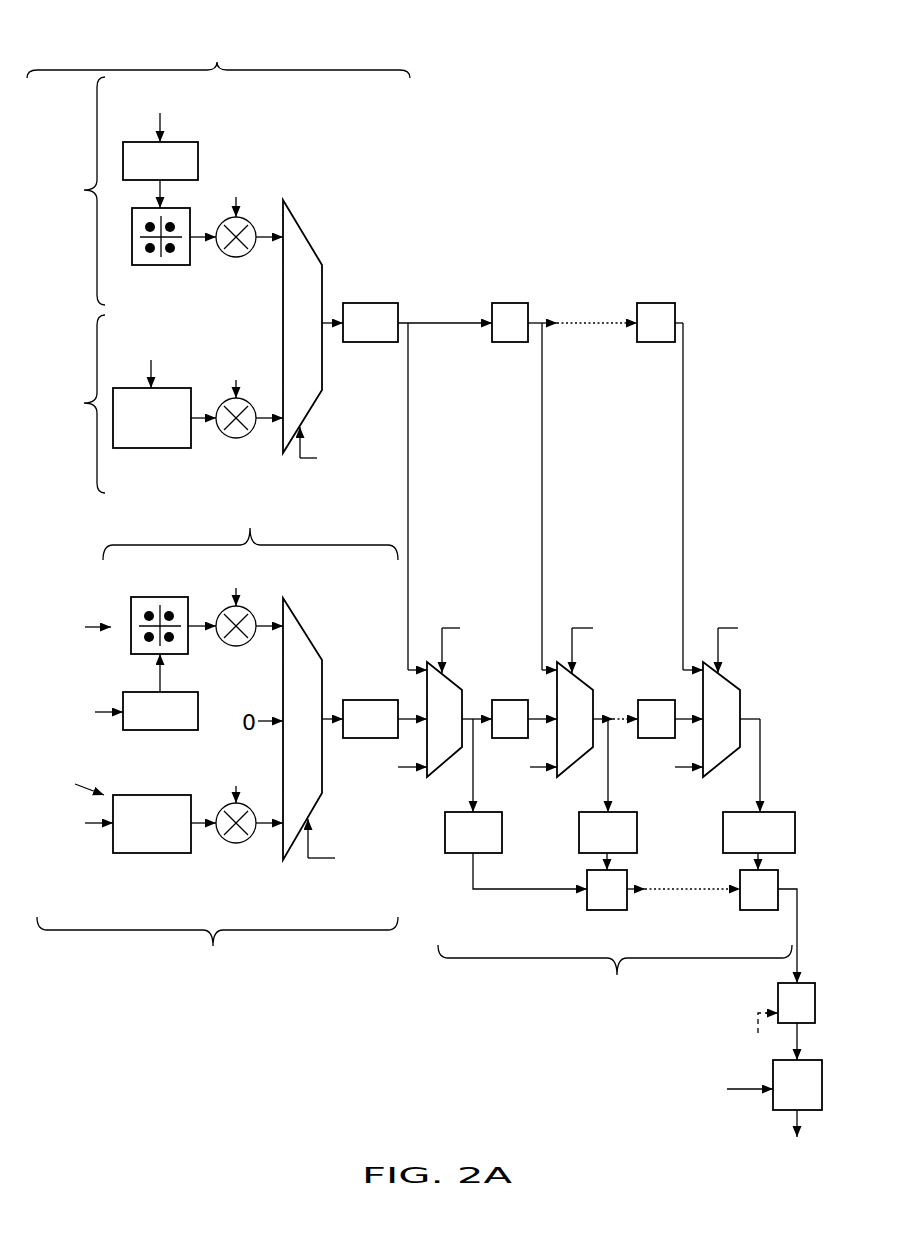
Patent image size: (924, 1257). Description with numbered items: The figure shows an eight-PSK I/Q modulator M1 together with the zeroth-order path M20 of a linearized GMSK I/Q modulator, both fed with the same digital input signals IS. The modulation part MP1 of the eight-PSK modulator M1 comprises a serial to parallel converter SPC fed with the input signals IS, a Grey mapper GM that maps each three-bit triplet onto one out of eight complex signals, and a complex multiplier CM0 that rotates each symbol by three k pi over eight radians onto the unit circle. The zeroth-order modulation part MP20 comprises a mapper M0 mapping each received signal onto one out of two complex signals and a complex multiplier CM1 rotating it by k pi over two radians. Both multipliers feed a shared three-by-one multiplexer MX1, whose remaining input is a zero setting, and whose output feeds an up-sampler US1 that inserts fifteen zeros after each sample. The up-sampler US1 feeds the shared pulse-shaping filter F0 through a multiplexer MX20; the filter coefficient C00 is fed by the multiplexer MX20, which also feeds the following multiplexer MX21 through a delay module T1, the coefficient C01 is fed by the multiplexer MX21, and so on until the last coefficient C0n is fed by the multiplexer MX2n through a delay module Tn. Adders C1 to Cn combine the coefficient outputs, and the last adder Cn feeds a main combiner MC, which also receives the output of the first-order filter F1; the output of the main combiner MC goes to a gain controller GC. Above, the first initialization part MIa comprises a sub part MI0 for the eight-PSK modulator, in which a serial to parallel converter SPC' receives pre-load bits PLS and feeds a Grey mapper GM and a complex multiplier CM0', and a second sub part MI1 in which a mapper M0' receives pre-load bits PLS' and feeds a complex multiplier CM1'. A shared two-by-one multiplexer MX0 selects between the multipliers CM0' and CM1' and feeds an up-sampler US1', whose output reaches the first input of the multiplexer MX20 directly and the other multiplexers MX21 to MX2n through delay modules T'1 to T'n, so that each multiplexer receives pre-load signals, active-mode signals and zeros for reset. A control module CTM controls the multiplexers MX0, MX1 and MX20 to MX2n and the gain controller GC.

The first part of the initialization means MIa is at (257, 62).
The first sub part of the initialization means MI0 is at (96, 156).
The second sub part of the initialization means MI1 is at (96, 380).
The initialization bits PLS is at (163, 116).
The serial to parallel converter SPC' is at (203, 155).
The Grey mapper GM is at (152, 265).
The complex multiplier CM0' is at (239, 239).
The shared 2×1 multiplexer MX0 is at (327, 222).
The initialization bits PLS' is at (152, 362).
The mapper M0' is at (152, 445).
The complex multiplier CM1' is at (237, 421).
The control module CTM is at (545, 766).
The up-sampler US1' is at (361, 350).
The modulation part MP1 is at (313, 544).
The delay module T'1 is at (508, 295).
The delay module T'n is at (655, 295).
The 8PSK I/Q modulator M1 is at (81, 627).
The complex multiplier CM0 is at (235, 628).
The up-sampler US1 is at (360, 693).
The digital input signals IS is at (93, 767).
The serial to parallel converter SPC is at (160, 717).
The zeroth-order modulation path M20 is at (69, 785).
The mapper M0 is at (150, 848).
The complex multiplier CM1 is at (237, 825).
The shared 3×1 multiplexer MX1 is at (287, 860).
The modulation part of the zeroth-order path MP20 is at (213, 947).
The multiplexer MX20 is at (427, 777).
The multiplexer MX21 is at (557, 777).
The multiplexer MX2n is at (703, 777).
The delay module T1 is at (510, 700).
The delay module Tn is at (657, 700).
The filter coefficient C00 is at (473, 832).
The filter coefficient C01 is at (608, 832).
The filter coefficient C0n is at (759, 832).
The combiner C1 is at (612, 910).
The combiner Cn is at (758, 910).
The C0 filter F0 is at (617, 975).
The main combiner MC is at (778, 988).
The C1 filter F1 is at (761, 1037).
The gain controller GC is at (773, 1070).